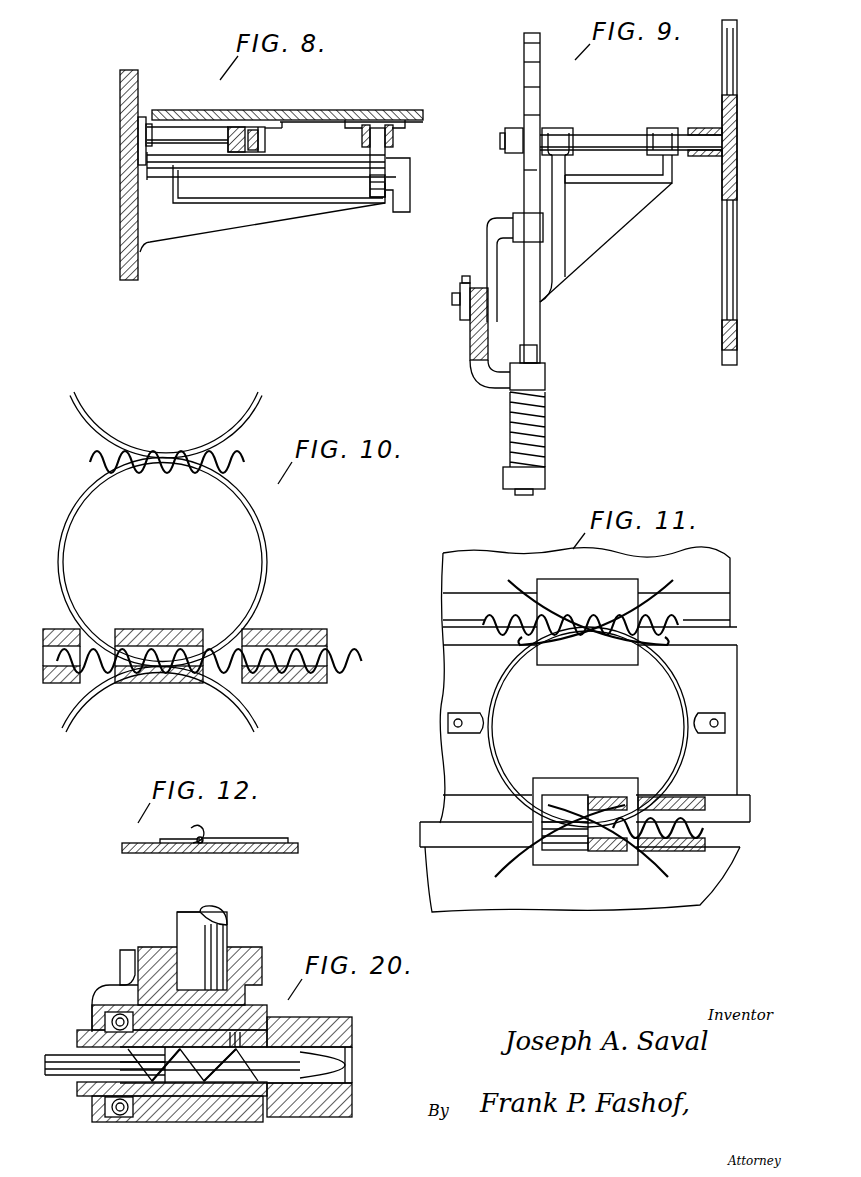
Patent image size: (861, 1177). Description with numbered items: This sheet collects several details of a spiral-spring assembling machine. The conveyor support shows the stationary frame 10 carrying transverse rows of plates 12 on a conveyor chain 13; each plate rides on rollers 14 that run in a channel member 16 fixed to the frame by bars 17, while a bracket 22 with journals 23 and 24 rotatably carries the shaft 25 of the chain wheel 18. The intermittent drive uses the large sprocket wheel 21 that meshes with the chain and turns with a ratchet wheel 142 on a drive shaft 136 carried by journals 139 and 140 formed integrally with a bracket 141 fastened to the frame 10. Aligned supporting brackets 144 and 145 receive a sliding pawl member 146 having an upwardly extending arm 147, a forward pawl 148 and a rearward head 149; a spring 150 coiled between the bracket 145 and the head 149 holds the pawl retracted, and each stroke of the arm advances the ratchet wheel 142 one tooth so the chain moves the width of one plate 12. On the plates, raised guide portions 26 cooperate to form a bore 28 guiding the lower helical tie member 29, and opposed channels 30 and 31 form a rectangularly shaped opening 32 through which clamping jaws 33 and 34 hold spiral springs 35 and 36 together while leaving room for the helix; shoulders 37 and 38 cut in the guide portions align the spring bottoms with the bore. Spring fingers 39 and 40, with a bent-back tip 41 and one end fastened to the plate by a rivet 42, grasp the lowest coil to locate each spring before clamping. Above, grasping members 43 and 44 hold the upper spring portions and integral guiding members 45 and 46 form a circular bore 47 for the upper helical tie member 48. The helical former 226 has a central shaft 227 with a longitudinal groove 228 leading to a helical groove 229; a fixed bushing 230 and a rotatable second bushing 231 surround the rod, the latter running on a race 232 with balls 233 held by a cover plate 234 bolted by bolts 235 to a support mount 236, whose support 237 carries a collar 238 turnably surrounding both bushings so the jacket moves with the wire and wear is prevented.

In FIG. 8, the frame 10 is at (122, 150).
In FIG. 9, the frame 10 is at (470, 338).
In FIG. 8, the plates 12 is at (336, 103).
In FIG. 11, the plates 12 is at (470, 738).
In FIG. 12, the plates 12 is at (255, 854).
In FIG. 8, the conveyor chain 13 is at (396, 160).
In FIG. 8, the rollers 14 is at (248, 136).
In FIG. 8, the channel member 16 is at (266, 140).
In FIG. 8, the bars 17 is at (176, 132).
In FIG. 8, the wheel 18 is at (378, 200).
In FIG. 9, the sprocket wheel 21 is at (740, 202).
In FIG. 8, the bracket 22 is at (262, 212).
In FIG. 8, the journal 23 is at (160, 173).
In FIG. 8, the journal 24 is at (410, 180).
In FIG. 8, the shaft 25 is at (345, 180).
In FIG. 11, the guide portions 26 is at (445, 600).
In FIG. 11, the bore 28 is at (700, 818).
In FIG. 11, the helical tie member 29 is at (680, 618).
In FIG. 11, the channel 30 is at (545, 866).
In FIG. 11, the channel 31 is at (645, 773).
In FIG. 11, the rectangularly shaped opening 32 is at (620, 862).
In FIG. 11, the clamping jaw 33 is at (565, 800).
In FIG. 11, the clamping jaw 34 is at (575, 852).
In FIG. 10, the spiral spring 35 is at (246, 716).
In FIG. 11, the spiral spring 35 is at (660, 878).
In FIG. 12, the spiral spring 35 is at (272, 838).
In FIG. 10, the spiral spring 36 is at (268, 550).
In FIG. 11, the spiral spring 36 is at (686, 699).
In FIG. 11, the shoulder 37 is at (660, 650).
In FIG. 11, the shoulder 38 is at (522, 650).
In FIG. 11, the spring finger 39 is at (708, 718).
In FIG. 11, the spring finger 40 is at (470, 704).
In FIG. 12, the spring finger 40 is at (184, 843).
In FIG. 12, the curl 41 is at (203, 832).
In FIG. 12, the rivet 42 is at (162, 852).
In FIG. 10, the grasping member 43 is at (172, 636).
In FIG. 10, the grasping member 44 is at (152, 684).
In FIG. 10, the guiding member 45 is at (302, 625).
In FIG. 10, the guiding member 46 is at (300, 690).
In FIG. 10, the circular bore 47 is at (325, 668).
In FIG. 10, the helical tie member 48 is at (92, 460).
In FIG. 9, the shaft 136 is at (604, 132).
In FIG. 9, the journal 139 is at (556, 133).
In FIG. 9, the journal 140 is at (660, 134).
In FIG. 9, the bracket 141 is at (615, 203).
In FIG. 9, the ratchet wheel 142 is at (524, 76).
In FIG. 9, the supporting bracket 144 is at (497, 240).
In FIG. 9, the supporting bracket 145 is at (490, 378).
In FIG. 9, the pawl member 146 is at (542, 300).
In FIG. 9, the arm 147 is at (540, 350).
In FIG. 9, the pawl 148 is at (533, 174).
In FIG. 9, the head 149 is at (548, 470).
In FIG. 9, the spring 150 is at (548, 425).
In FIG. 20, the helical former 226 is at (322, 1025).
In FIG. 20, the central shaft 227 is at (345, 1065).
In FIG. 20, the longitudinal groove 228 is at (340, 1110).
In FIG. 20, the helical groove 229 is at (200, 1085).
In FIG. 20, the bushing 230 is at (340, 1032).
In FIG. 20, the second bushing 231 is at (170, 1096).
In FIG. 20, the race 232 is at (112, 1116).
In FIG. 20, the balls 233 is at (112, 1024).
In FIG. 20, the cover plate 234 is at (95, 997).
In FIG. 20, the bolts 235 is at (120, 955).
In FIG. 20, the support mount 236 is at (255, 952).
In FIG. 20, the support 237 is at (222, 930).
In FIG. 20, the collar 238 is at (255, 1121).